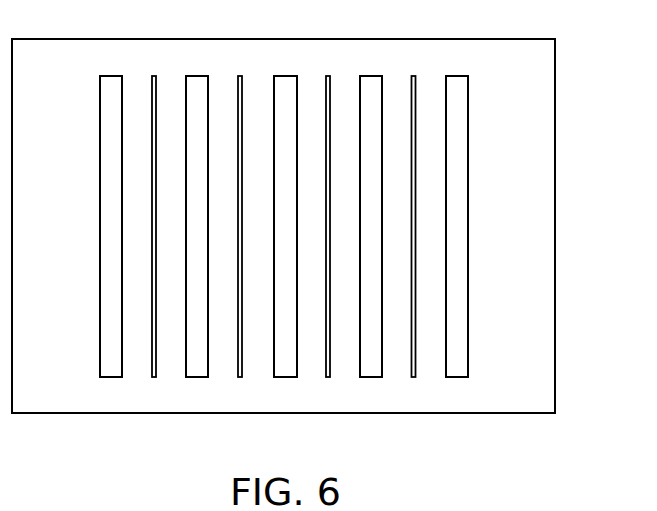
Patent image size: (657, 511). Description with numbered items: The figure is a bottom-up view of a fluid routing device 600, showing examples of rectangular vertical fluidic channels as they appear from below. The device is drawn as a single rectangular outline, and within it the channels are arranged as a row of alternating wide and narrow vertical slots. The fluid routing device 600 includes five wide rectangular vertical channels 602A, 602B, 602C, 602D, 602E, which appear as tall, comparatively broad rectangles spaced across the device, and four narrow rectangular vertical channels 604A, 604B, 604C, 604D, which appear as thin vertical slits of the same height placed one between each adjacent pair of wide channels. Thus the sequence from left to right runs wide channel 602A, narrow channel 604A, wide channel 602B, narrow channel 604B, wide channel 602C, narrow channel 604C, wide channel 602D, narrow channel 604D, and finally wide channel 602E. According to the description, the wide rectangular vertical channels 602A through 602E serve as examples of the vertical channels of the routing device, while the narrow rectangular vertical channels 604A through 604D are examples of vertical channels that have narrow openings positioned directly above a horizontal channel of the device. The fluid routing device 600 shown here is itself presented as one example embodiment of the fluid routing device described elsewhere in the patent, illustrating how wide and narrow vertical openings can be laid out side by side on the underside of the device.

The fluid routing device 600 is at (508, 39).
The wide rectangular vertical channel 602A is at (100, 253).
The wide rectangular vertical channel 602B is at (197, 377).
The wide rectangular vertical channel 602C is at (283, 377).
The wide rectangular vertical channel 602D is at (368, 377).
The wide rectangular vertical channel 602E is at (468, 238).
The narrow rectangular vertical channel 604A is at (154, 75).
The narrow rectangular vertical channel 604B is at (240, 75).
The narrow rectangular vertical channel 604C is at (328, 75).
The narrow rectangular vertical channel 604D is at (414, 75).